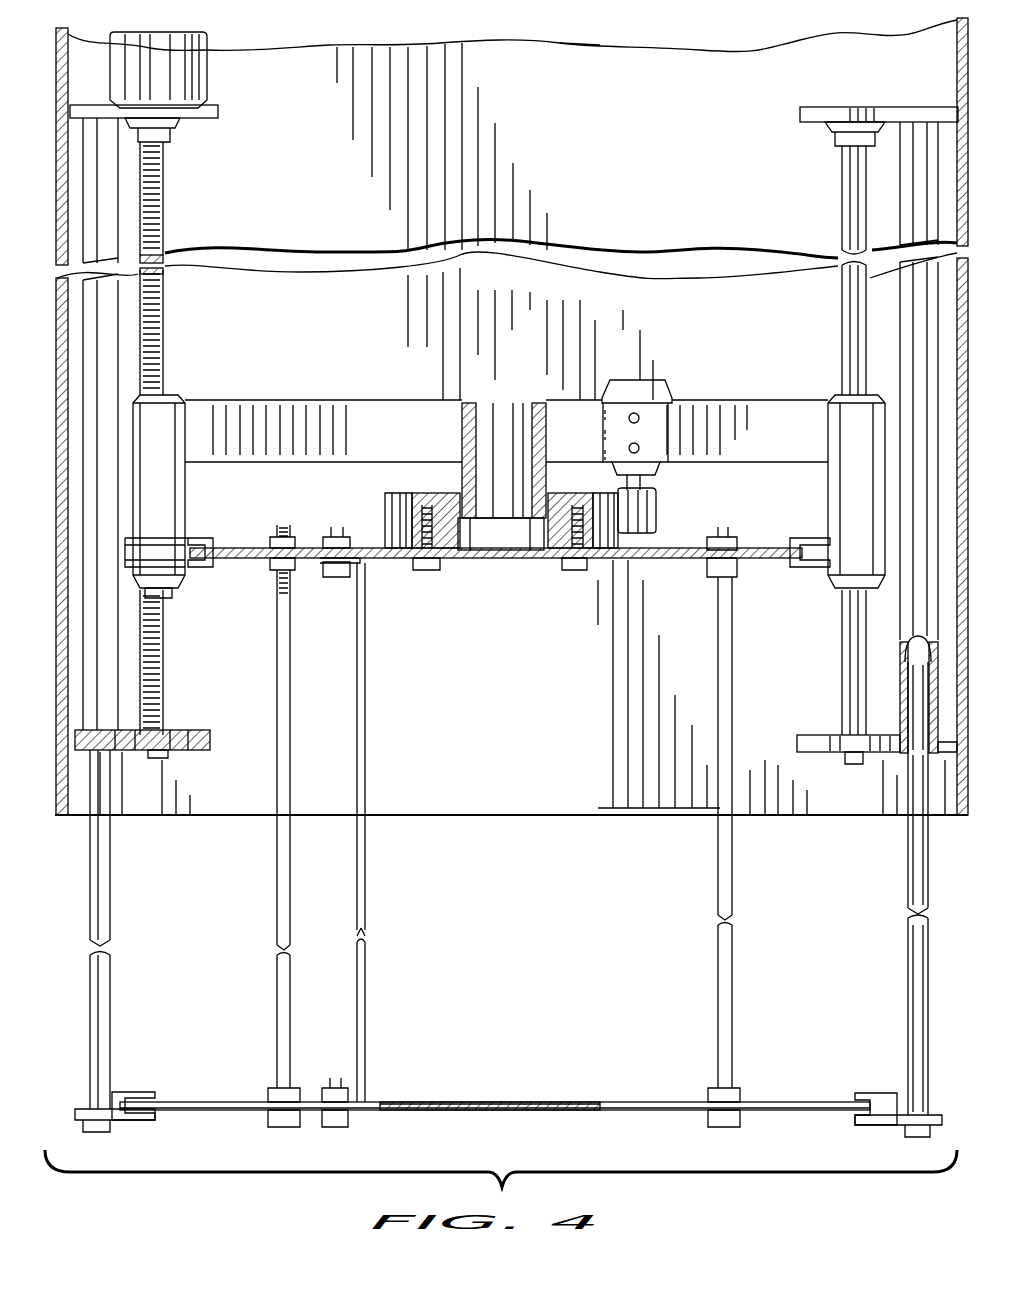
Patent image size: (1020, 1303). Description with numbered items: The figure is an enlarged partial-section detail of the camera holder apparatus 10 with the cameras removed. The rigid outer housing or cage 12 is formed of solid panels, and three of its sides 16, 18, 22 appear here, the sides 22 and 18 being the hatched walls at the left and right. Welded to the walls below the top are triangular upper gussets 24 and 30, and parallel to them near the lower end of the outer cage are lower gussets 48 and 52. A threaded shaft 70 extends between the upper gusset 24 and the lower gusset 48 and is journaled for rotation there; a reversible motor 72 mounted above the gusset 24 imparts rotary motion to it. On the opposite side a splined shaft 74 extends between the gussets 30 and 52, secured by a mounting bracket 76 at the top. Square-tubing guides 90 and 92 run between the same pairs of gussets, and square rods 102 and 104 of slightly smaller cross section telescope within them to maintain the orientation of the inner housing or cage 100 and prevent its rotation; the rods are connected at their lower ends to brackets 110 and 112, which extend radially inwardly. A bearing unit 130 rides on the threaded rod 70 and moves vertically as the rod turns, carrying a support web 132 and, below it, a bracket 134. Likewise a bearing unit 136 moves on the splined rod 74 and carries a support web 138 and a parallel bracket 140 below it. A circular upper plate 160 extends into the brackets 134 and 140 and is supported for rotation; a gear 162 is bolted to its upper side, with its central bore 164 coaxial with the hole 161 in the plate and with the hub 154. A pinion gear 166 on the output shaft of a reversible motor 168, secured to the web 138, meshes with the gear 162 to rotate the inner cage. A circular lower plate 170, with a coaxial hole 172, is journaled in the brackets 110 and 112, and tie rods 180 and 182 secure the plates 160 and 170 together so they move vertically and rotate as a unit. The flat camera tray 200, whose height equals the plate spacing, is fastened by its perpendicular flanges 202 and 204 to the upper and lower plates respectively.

The camera holder apparatus 10 is at (795, 1122).
The outer housing or cage 12 is at (280, 45).
The side 16 is at (582, 52).
The side 18 is at (957, 62).
The side 22 is at (70, 82).
The gusset 24 is at (218, 112).
The gusset 30 is at (800, 114).
The gusset 48 is at (190, 733).
The gusset 52 is at (815, 735).
The threaded shaft 70 is at (165, 204).
The motor 72 is at (203, 72).
The splined shaft 74 is at (840, 338).
The mounting bracket 76 is at (830, 132).
The guide 90 is at (108, 340).
The guide 92 is at (900, 320).
The inner housing or cage 100 is at (585, 1117).
The rod 102 is at (110, 912).
The rod 104 is at (905, 903).
The bracket 110 is at (120, 1092).
The bracket 112 is at (875, 1093).
The bearing unit 130 is at (180, 400).
The support web 132 is at (320, 400).
The bracket 134 is at (190, 540).
The bearing unit 136 is at (830, 400).
The support web 138 is at (725, 400).
The bracket 140 is at (803, 540).
The hub 154 is at (470, 402).
The upper plate 160 is at (236, 546).
The central hole 161 is at (500, 560).
The gear 162 is at (392, 492).
The central aperture or bore 164 is at (462, 490).
The pinion gear 166 is at (660, 500).
The reversible motor 168 is at (668, 395).
The lower plate 170 is at (190, 1100).
The aperture or hole 172 is at (500, 1100).
The tie rod 180 is at (277, 650).
The tie rod 182 is at (718, 895).
The camera tray 200 is at (366, 960).
The flange 202 is at (318, 562).
The flange 204 is at (315, 1095).